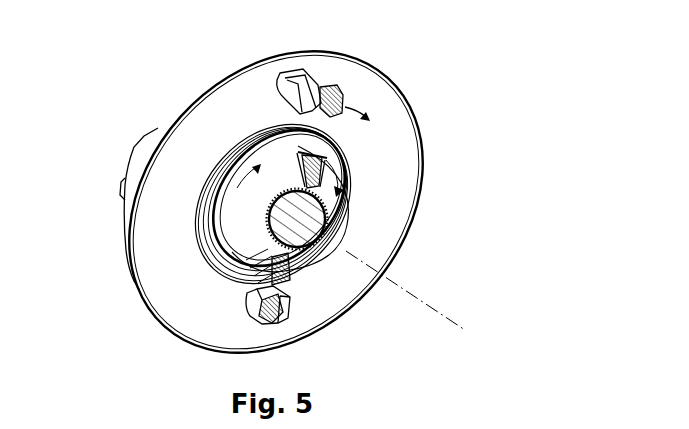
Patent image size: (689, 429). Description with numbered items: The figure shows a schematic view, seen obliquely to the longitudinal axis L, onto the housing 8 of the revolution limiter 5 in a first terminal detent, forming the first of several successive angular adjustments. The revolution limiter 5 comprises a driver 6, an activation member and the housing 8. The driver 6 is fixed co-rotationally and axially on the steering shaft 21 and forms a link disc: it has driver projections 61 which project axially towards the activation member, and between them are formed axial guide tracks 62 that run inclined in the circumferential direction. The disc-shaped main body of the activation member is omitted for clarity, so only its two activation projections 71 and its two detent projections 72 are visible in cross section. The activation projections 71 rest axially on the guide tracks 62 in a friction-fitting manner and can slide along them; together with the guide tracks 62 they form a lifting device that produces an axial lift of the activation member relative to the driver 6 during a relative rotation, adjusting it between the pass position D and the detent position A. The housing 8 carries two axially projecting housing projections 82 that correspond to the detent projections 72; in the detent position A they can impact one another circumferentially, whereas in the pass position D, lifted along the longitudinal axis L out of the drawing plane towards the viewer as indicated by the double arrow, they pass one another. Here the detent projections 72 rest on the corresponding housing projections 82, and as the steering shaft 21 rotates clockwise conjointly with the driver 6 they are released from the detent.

The revolution limiter 5 is at (433, 60).
The housing 8 is at (183, 137).
The driver 6 is at (233, 193).
The driver projections 61 is at (347, 163).
The guide tracks 62 is at (345, 206).
The steering shaft 21 is at (322, 234).
The activation projections 71 is at (298, 153).
The detent projections 72 is at (338, 87).
The housing projections 82 is at (300, 80).
The longitudinal axis L is at (466, 331).
The detent position A is at (580, 241).
The pass position D is at (577, 248).